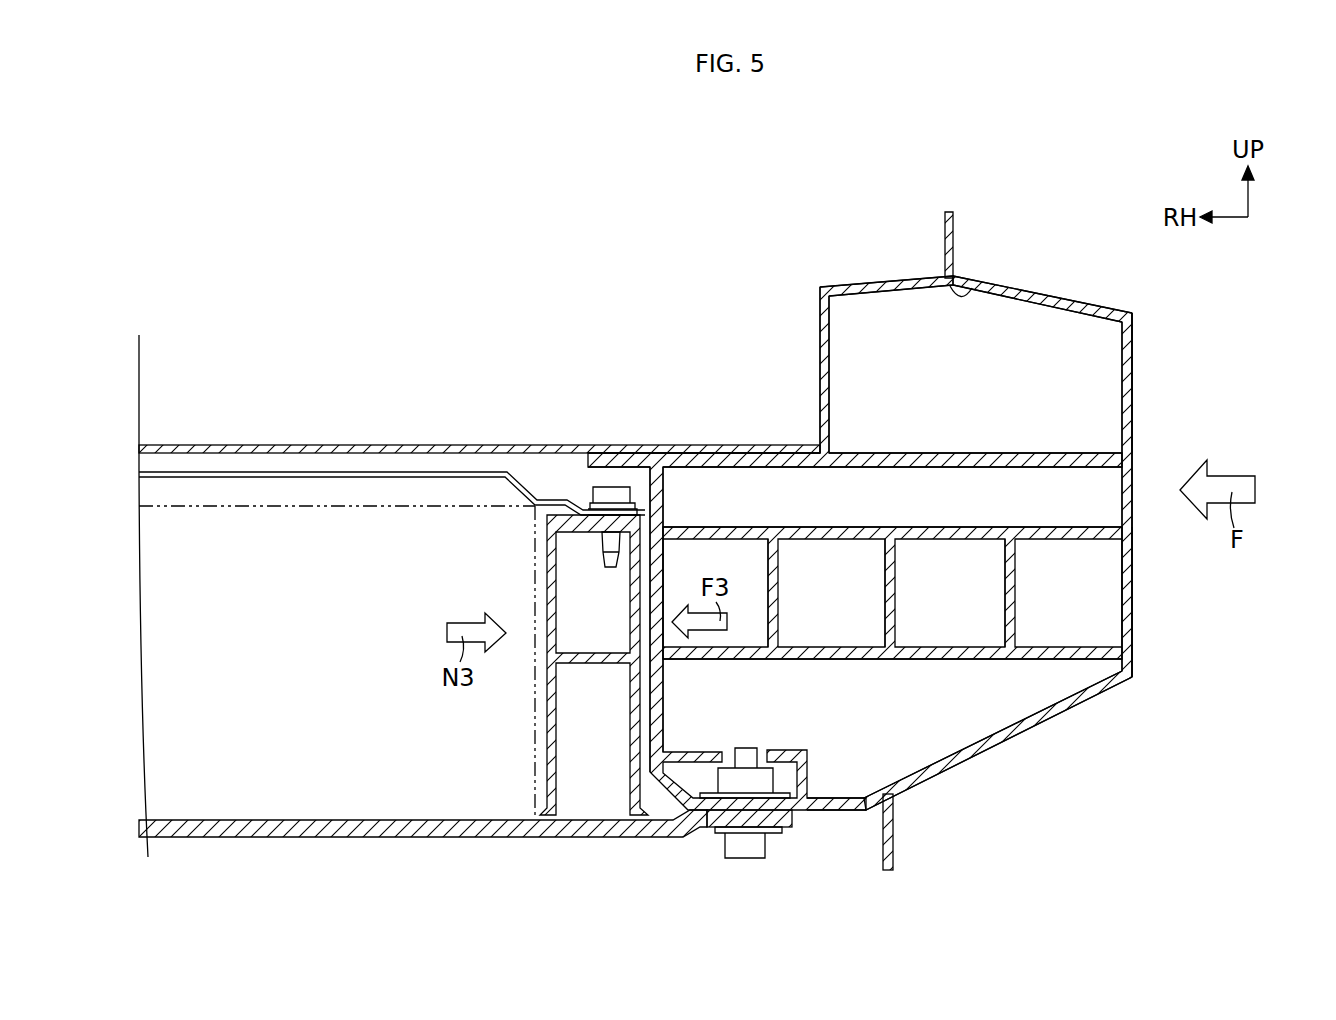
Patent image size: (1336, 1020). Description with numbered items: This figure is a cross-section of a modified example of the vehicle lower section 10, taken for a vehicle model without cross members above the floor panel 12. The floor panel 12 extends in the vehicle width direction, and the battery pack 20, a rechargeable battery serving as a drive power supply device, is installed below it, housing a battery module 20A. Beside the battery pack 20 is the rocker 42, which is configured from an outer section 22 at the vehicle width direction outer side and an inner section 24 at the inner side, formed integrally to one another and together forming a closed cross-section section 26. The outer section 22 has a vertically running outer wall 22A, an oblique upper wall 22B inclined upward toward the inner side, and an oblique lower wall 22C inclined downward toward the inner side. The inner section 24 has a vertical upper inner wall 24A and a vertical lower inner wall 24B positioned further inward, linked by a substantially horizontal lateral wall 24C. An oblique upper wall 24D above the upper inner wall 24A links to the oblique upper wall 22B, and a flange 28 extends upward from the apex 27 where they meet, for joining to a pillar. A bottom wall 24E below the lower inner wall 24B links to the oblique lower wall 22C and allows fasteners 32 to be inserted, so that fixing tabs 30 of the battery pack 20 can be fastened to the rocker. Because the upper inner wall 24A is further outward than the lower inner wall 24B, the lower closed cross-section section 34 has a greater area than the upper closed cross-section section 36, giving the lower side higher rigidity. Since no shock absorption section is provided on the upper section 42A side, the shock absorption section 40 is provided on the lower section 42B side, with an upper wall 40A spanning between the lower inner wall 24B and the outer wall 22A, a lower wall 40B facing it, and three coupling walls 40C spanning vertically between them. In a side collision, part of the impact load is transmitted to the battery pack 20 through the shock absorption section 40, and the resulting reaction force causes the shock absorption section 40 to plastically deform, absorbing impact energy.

The vehicle lower section 10 is at (1195, 294).
The floor panel 12 is at (428, 446).
The battery pack 20 is at (423, 687).
The battery module 20A is at (300, 790).
The outer section 22 is at (1136, 526).
The outer wall 22A is at (1133, 627).
The oblique upper wall 22B is at (1040, 297).
The oblique lower wall 22C is at (1008, 737).
The inner section 24 is at (820, 360).
The upper inner wall 24A is at (818, 320).
The lower inner wall 24B is at (655, 495).
The lateral wall 24C is at (690, 452).
The oblique upper wall 24D is at (890, 282).
The bottom wall 24E is at (832, 812).
The closed cross-section section 26 is at (993, 379).
The apex 27 is at (958, 292).
The flange 28 is at (954, 222).
The fixing tab 30 is at (716, 816).
The fastener 32 is at (745, 846).
The lower closed cross-section section 34 is at (877, 708).
The upper closed cross-section section 36 is at (953, 379).
The shock absorption section 40 is at (780, 662).
The upper wall 40A is at (718, 530).
The lower wall 40B is at (710, 652).
The coupling wall 40C is at (775, 592).
The rocker 42 is at (1137, 434).
The upper section 42A is at (1132, 384).
The lower section 42B is at (1133, 587).